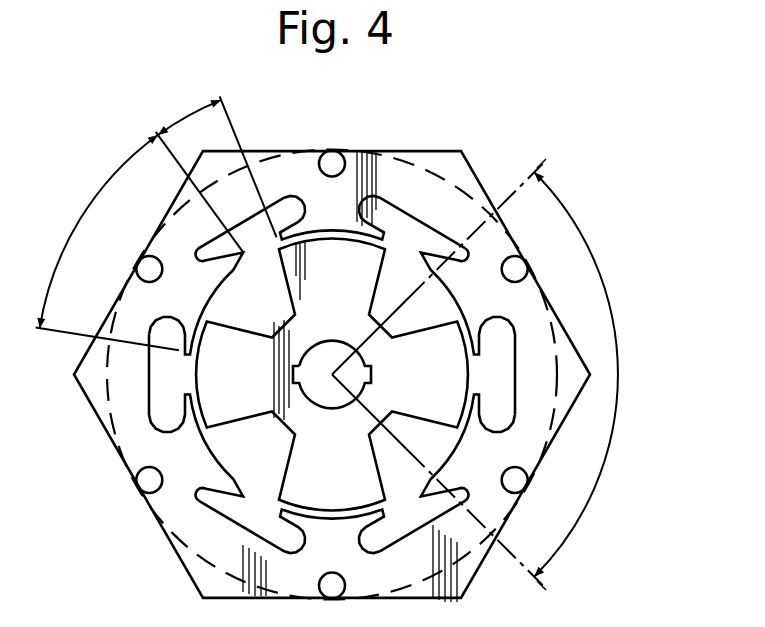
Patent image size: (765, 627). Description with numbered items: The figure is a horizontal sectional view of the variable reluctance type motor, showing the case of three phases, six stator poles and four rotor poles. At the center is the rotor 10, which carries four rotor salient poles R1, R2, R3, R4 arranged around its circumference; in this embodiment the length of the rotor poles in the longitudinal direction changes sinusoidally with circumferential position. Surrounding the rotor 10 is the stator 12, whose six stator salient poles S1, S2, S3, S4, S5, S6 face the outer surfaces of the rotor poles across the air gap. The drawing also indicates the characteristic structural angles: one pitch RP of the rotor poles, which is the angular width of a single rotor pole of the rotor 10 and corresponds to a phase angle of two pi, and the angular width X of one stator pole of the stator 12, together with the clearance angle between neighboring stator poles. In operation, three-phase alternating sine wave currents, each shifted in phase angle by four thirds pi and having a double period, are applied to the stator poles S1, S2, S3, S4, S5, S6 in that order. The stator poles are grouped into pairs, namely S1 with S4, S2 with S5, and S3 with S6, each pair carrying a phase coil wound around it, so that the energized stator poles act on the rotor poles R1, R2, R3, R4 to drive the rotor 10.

The rotor 10 is at (357, 315).
The stator 12 is at (332, 349).
The rotor pole R1 is at (332, 282).
The rotor pole R2 is at (239, 375).
The rotor pole R3 is at (332, 466).
The rotor pole R4 is at (424, 375).
The stator pole S1 is at (372, 220).
The stator pole S2 is at (216, 276).
The stator pole S3 is at (196, 418).
The stator pole S4 is at (291, 527).
The stator pole S5 is at (447, 473).
The stator pole S6 is at (468, 331).
The rotor pole pitch RP is at (594, 374).
The angular width of stator pole X is at (99, 231).